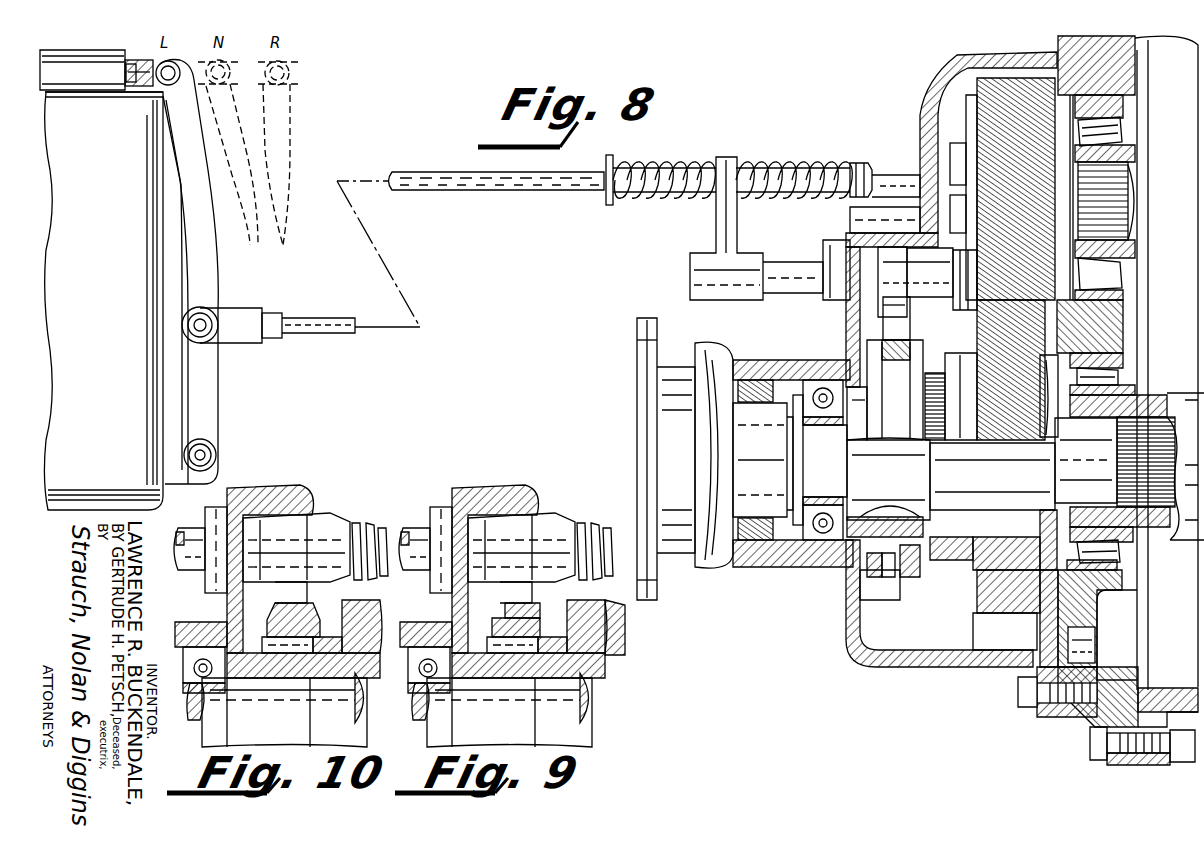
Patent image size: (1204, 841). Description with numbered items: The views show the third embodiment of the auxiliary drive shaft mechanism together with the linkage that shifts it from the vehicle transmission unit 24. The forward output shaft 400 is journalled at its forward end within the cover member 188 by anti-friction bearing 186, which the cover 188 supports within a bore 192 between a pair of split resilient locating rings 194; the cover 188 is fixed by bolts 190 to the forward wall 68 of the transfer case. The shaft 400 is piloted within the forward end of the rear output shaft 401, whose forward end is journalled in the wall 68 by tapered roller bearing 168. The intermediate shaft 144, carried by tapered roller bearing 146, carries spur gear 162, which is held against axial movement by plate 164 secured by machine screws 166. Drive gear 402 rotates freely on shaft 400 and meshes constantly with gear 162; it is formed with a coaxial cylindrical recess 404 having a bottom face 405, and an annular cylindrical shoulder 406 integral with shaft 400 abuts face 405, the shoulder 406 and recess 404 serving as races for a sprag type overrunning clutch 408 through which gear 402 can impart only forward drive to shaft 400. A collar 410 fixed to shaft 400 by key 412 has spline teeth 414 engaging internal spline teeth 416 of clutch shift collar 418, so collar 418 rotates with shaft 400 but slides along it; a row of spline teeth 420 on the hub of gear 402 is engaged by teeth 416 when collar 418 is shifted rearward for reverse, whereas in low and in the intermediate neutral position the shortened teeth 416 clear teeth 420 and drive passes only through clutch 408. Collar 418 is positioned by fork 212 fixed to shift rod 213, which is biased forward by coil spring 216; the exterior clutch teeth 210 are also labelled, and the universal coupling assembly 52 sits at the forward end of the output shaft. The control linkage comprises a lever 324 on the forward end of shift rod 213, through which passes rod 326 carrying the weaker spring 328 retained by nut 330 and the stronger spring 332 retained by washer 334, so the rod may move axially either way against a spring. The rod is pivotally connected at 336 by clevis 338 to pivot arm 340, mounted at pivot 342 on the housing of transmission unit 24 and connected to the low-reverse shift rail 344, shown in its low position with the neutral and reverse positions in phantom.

In FIG. 8, the transmission unit 24 is at (98, 294).
In FIG. 8, the universal coupling assembly 52 is at (634, 328).
In FIG. 8, the front wall 68 is at (1120, 60).
In FIG. 8, the intermediate shaft 144 is at (1125, 210).
In FIG. 8, the tapered roller bearing 146 is at (1124, 118).
In FIG. 8, the spur gear 162 is at (1003, 78).
In FIG. 8, the plate 164 is at (960, 120).
In FIG. 8, the machine screws 166 is at (950, 158).
In FIG. 8, the tapered roller bearing 168 is at (1118, 548).
In FIG. 8, the anti-friction bearing 186 is at (830, 575).
In FIG. 10, the anti-friction bearing 186 is at (186, 695).
In FIG. 9, the anti-friction bearing 186 is at (413, 690).
In FIG. 10, the cover member 188 is at (272, 495).
In FIG. 9, the cover member 188 is at (452, 495).
In FIG. 8, the bolts 190 is at (1016, 700).
In FIG. 8, the bore 192 is at (782, 362).
In FIG. 8, the split resilient locating rings 194 is at (830, 380).
In FIG. 10, the split resilient locating rings 194 is at (212, 640).
In FIG. 9, the split resilient locating rings 194 is at (437, 640).
In FIG. 8, the exterior teeth 210 is at (918, 318).
In FIG. 10, the fork 212 is at (318, 520).
In FIG. 9, the fork 212 is at (540, 520).
In FIG. 10, the shift rod 213 is at (190, 536).
In FIG. 9, the shift rod 213 is at (495, 548).
In FIG. 8, the coil spring 216 is at (955, 274).
In FIG. 10, the coil spring 216 is at (372, 523).
In FIG. 9, the coil spring 216 is at (596, 523).
In FIG. 8, the bracket 324 is at (716, 222).
In FIG. 8, the control rod 326 is at (310, 318).
In FIG. 8, the spring 328 is at (758, 172).
In FIG. 8, the nut 330 is at (856, 163).
In FIG. 8, the spring 332 is at (628, 200).
In FIG. 8, the washer 334 is at (609, 155).
In FIG. 8, the pivotal connection 336 is at (210, 315).
In FIG. 8, the clevis 338 is at (252, 340).
In FIG. 8, the pivot arm 340 is at (197, 164).
In FIG. 8, the pivotal mounting 342 is at (216, 452).
In FIG. 8, the low-reverse shift rail 344 is at (130, 62).
In FIG. 8, the forward output shaft 400 is at (831, 461).
In FIG. 10, the forward output shaft 400 is at (350, 727).
In FIG. 9, the forward output shaft 400 is at (588, 718).
In FIG. 8, the rear output shaft 401 is at (1150, 395).
In FIG. 8, the drive gear 402 is at (985, 620).
In FIG. 9, the drive gear 402 is at (617, 640).
In FIG. 8, the cylindrical recess 404 is at (978, 575).
In FIG. 8, the bottom face 405 is at (960, 562).
In FIG. 8, the annular cylindrical shoulder 406 is at (1020, 460).
In FIG. 8, the sprag type overrunning clutch 408 is at (980, 595).
In FIG. 8, the collar 410 is at (860, 588).
In FIG. 9, the collar 410 is at (470, 680).
In FIG. 8, the key 412 is at (878, 508).
In FIG. 8, the spline teeth 414 is at (910, 580).
In FIG. 10, the spline teeth 414 is at (270, 620).
In FIG. 9, the spline teeth 414 is at (505, 640).
In FIG. 8, the internal spline teeth 416 is at (880, 578).
In FIG. 10, the internal spline teeth 416 is at (283, 653).
In FIG. 9, the internal spline teeth 416 is at (505, 628).
In FIG. 8, the clutch shift collar 418 is at (890, 580).
In FIG. 9, the clutch shift collar 418 is at (505, 616).
In FIG. 8, the spline teeth 420 is at (938, 373).
In FIG. 10, the spline teeth 420 is at (336, 622).
In FIG. 9, the spline teeth 420 is at (561, 622).